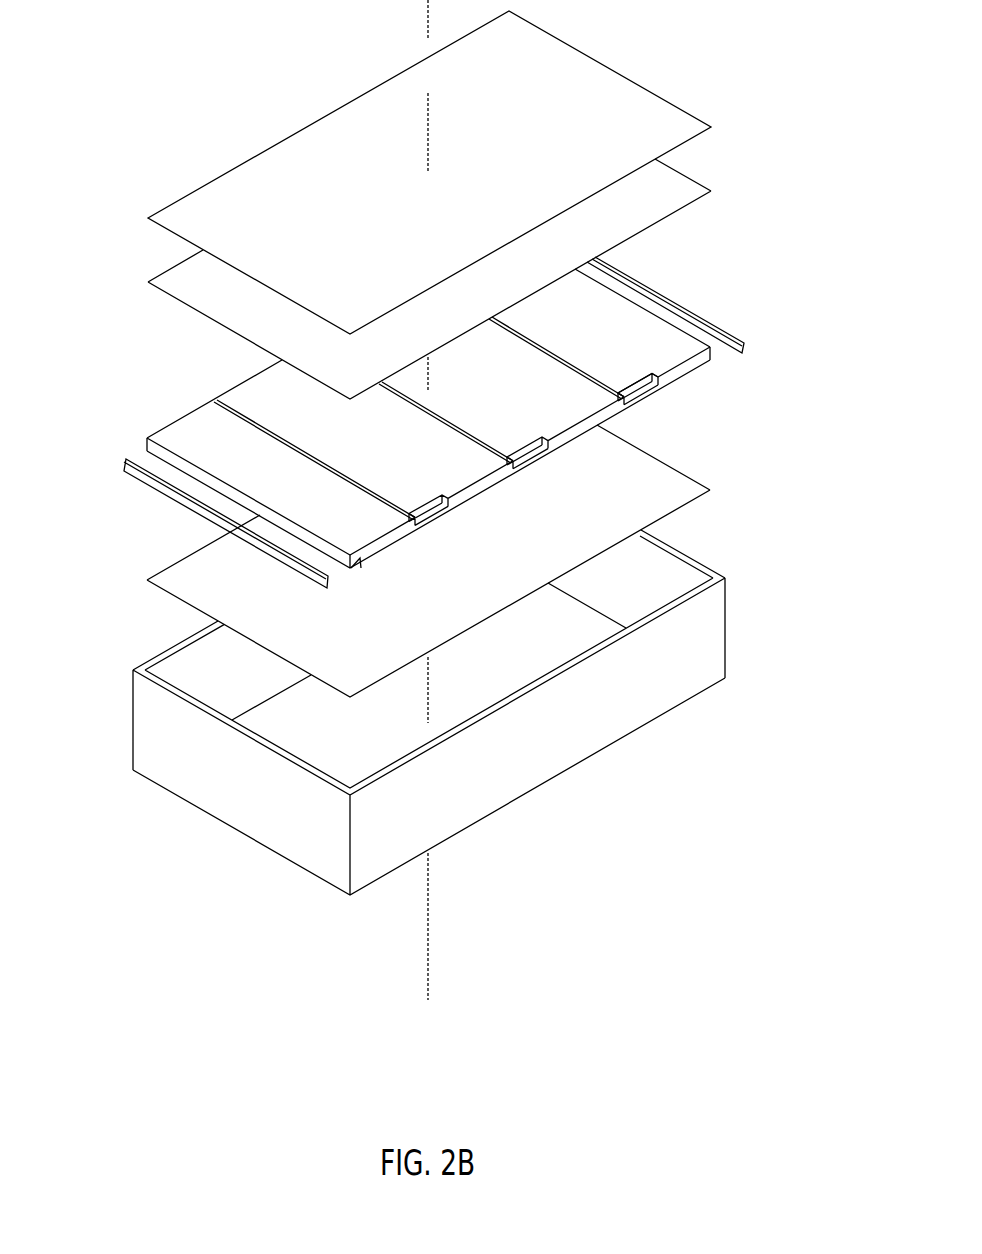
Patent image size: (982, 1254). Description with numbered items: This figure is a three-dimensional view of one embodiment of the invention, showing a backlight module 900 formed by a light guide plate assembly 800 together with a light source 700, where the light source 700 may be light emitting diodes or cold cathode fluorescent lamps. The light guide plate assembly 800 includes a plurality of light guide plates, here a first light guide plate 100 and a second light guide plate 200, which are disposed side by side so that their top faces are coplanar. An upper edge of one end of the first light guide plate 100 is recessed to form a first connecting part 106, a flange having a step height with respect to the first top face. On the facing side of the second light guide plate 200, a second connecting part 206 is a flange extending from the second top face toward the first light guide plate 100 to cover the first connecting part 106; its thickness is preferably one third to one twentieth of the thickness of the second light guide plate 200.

The backlight module 900 is at (181, 27).
The light guide plate assembly 800 is at (403, 418).
The second light guide plate 200 is at (409, 418).
The first light guide plate 100 is at (422, 418).
The first connecting part 106 is at (657, 394).
The second connecting part 206 is at (640, 389).
The light source 700 is at (124, 461).